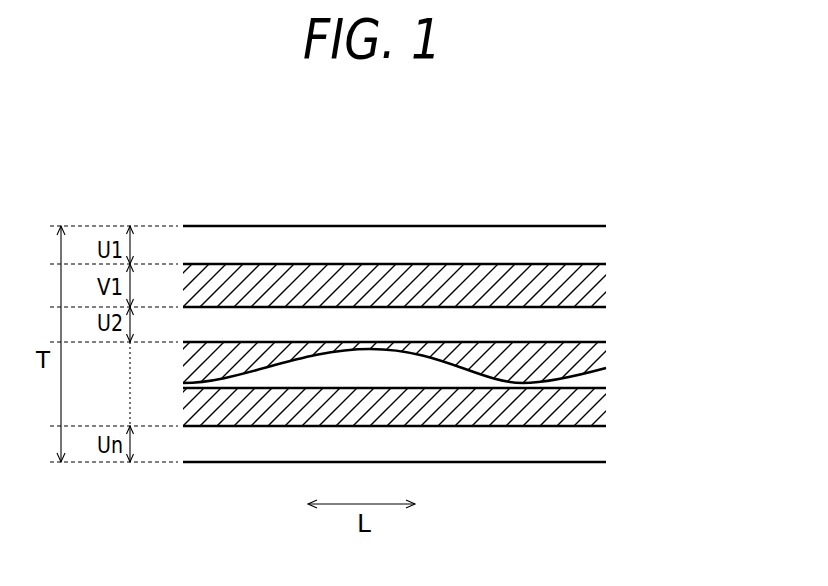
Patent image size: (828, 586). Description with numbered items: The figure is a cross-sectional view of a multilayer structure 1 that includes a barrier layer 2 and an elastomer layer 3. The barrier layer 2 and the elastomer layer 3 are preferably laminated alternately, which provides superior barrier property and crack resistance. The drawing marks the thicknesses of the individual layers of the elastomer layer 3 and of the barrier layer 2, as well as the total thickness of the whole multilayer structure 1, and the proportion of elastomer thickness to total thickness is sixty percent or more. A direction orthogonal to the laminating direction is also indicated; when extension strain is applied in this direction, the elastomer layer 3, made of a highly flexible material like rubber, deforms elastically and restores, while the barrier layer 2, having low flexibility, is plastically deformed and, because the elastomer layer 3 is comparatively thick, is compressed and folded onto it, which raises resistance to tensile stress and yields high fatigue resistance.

The multilayer structure 1 is at (545, 165).
The barrier layer 2 is at (588, 287).
The elastomer layer 3 is at (593, 243).